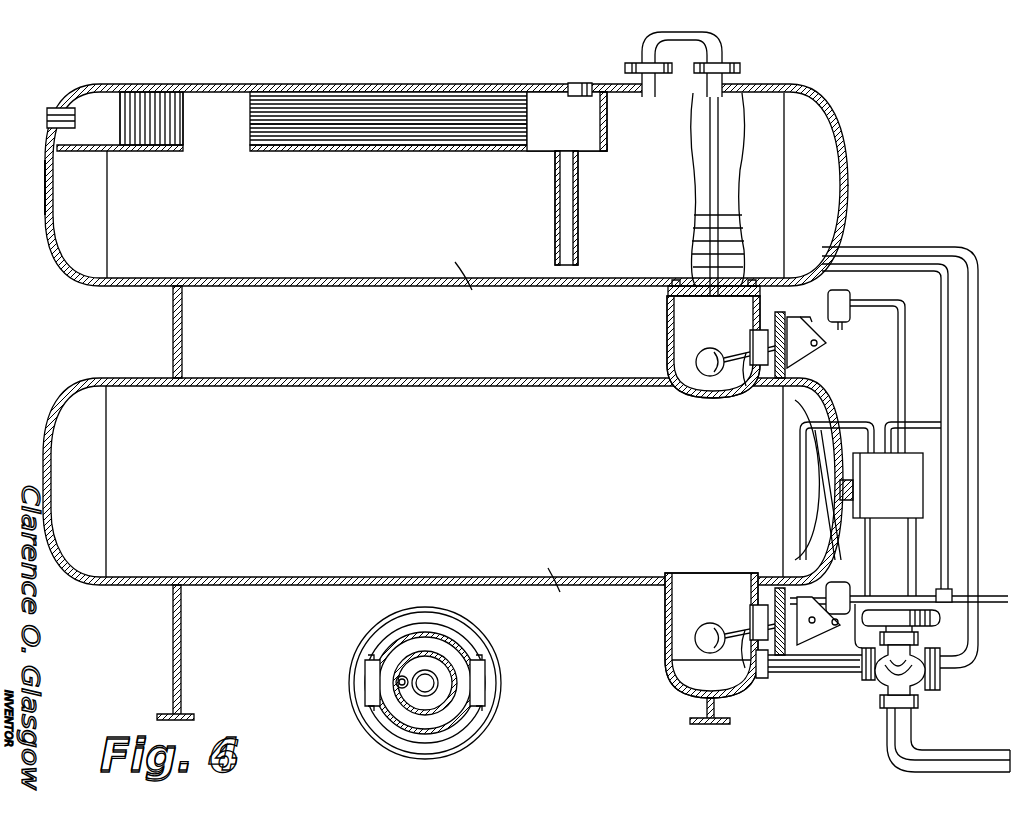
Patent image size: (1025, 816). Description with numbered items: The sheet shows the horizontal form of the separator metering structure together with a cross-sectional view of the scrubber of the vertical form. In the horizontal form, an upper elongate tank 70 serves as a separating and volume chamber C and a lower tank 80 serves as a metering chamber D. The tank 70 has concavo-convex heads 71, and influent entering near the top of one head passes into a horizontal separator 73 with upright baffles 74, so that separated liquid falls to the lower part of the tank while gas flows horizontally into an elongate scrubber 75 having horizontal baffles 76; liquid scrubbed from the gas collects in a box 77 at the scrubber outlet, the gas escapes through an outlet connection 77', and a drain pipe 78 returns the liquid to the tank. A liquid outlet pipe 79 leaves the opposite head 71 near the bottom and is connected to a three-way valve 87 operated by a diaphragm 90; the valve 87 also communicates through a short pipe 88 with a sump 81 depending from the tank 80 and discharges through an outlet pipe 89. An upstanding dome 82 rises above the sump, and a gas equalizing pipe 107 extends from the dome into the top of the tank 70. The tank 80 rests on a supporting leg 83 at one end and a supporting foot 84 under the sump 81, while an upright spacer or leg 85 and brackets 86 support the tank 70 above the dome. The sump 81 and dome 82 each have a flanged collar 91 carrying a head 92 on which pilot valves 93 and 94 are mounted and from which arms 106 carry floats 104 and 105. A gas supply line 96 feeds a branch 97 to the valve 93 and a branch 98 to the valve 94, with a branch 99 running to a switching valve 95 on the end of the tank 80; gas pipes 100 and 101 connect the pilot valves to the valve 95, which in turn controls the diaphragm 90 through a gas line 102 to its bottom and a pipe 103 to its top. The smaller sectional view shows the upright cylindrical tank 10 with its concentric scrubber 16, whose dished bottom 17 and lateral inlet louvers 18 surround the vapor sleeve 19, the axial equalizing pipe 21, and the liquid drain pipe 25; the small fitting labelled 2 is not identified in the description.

In FIG. 4, the inlet fitting 2 is at (46, 117).
In FIG. 4, the upper horizontal tank 70 is at (385, 86).
In FIG. 4, the concavo-convex head 71 is at (52, 222).
In FIG. 4, the horizontal separator 73 is at (107, 138).
In FIG. 4, the upright baffles 74 is at (140, 140).
In FIG. 4, the horizontal scrubber 75 is at (370, 148).
In FIG. 4, the horizontal baffles 76 is at (488, 140).
In FIG. 4, the box 77 is at (589, 121).
In FIG. 4, the outlet connection 77' is at (566, 67).
In FIG. 4, the drain pipe 78 is at (578, 205).
In FIG. 4, the gas equalizing pipe 107 is at (722, 142).
In FIG. 4, the separating and volume chamber C is at (469, 288).
In FIG. 4, the metering chamber D is at (557, 592).
In FIG. 4, the lower horizontal tank 80 is at (340, 380).
In FIG. 4, the upright spacer or leg 85 is at (183, 330).
In FIG. 4, the supporting leg 83 is at (182, 658).
In FIG. 4, the brackets 86 is at (668, 292).
In FIG. 4, the dome 82 is at (666, 336).
In FIG. 4, the float 104 is at (706, 368).
In FIG. 4, the arms 106 is at (748, 362).
In FIG. 4, the flanged collar 91 is at (752, 333).
In FIG. 4, the head 92 is at (812, 352).
In FIG. 4, the pilot valve 93 is at (852, 283).
In FIG. 4, the liquid outlet pipe 79 is at (975, 340).
In FIG. 4, the branch 97 is at (940, 312).
In FIG. 4, the gas pipe 100 is at (900, 398).
In FIG. 4, the branch 99 is at (923, 420).
In FIG. 4, the gas pipe 101 is at (836, 423).
In FIG. 4, the relay or switching valve 95 is at (888, 505).
In FIG. 4, the gas line 102 is at (871, 560).
In FIG. 4, the pipe 103 is at (918, 542).
In FIG. 4, the gas supply line 96 is at (998, 595).
In FIG. 4, the branch 98 is at (944, 589).
In FIG. 4, the pilot valve 94 is at (850, 595).
In FIG. 4, the sump 81 is at (664, 622).
In FIG. 4, the float 105 is at (710, 622).
In FIG. 4, the diaphragm 90 is at (935, 618).
In FIG. 4, the short pipe 88 is at (820, 675).
In FIG. 4, the three-way valve 87 is at (882, 672).
In FIG. 4, the outlet or discharge pipe 89 is at (888, 752).
In FIG. 4, the supporting foot 84 is at (706, 706).
In FIG. 6, the upright cylindrical tank 10 is at (385, 620).
In FIG. 6, the cylindrical scrubber 16 is at (368, 652).
In FIG. 6, the dished bottom 17 is at (450, 646).
In FIG. 6, the lateral inlet louvers 18 is at (364, 683).
In FIG. 6, the vapor sleeve 19 is at (395, 704).
In FIG. 6, the equalizing pipe 21 is at (420, 698).
In FIG. 6, the liquid drain pipe 25 is at (402, 674).